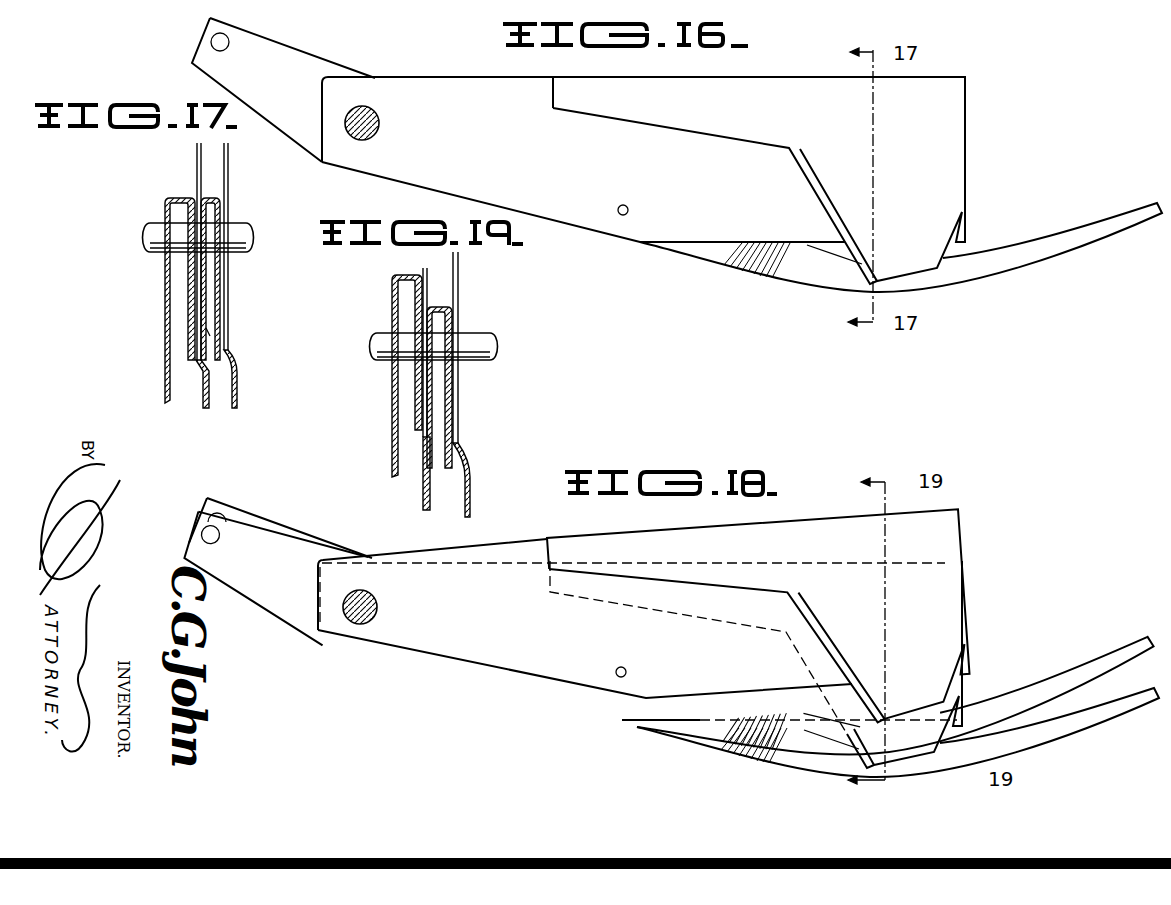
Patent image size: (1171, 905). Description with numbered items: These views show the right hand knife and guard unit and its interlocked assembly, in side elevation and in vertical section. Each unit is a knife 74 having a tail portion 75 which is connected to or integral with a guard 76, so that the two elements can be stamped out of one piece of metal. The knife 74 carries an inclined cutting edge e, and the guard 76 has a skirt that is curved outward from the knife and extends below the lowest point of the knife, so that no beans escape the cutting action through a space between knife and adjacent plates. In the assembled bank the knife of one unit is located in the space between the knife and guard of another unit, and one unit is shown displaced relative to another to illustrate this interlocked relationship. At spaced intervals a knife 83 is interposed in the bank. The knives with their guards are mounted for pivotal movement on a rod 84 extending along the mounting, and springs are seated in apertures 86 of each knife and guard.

In FIG. 16, the knife 74 is at (965, 180).
In FIG. 17, the knife 74 is at (165, 305).
In FIG. 19, the knife 74 is at (392, 420).
In FIG. 18, the knife 74 is at (945, 604).
In FIG. 16, the tail portion 75 is at (442, 95).
In FIG. 18, the tail portion 75 is at (485, 575).
In FIG. 16, the guard 76 is at (968, 274).
In FIG. 17, the guard 76 is at (237, 390).
In FIG. 18, the guard 76 is at (1067, 722).
In FIG. 17, the knife 83 is at (210, 333).
In FIG. 16, the rod 84 is at (375, 108).
In FIG. 17, the rod 84 is at (145, 232).
In FIG. 19, the rod 84 is at (473, 358).
In FIG. 18, the rod 84 is at (357, 622).
In FIG. 16, the apertures 86 is at (212, 40).
In FIG. 18, the apertures 86 is at (200, 536).
In FIG. 16, the inclined cutting edge e is at (805, 182).